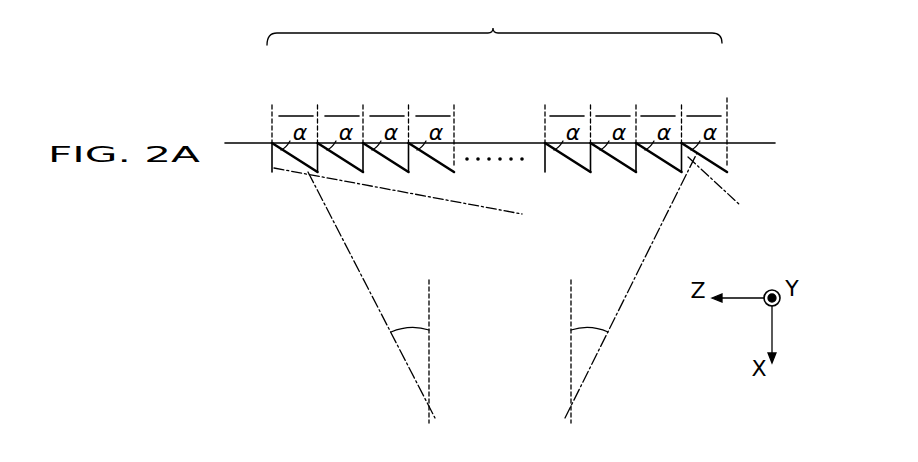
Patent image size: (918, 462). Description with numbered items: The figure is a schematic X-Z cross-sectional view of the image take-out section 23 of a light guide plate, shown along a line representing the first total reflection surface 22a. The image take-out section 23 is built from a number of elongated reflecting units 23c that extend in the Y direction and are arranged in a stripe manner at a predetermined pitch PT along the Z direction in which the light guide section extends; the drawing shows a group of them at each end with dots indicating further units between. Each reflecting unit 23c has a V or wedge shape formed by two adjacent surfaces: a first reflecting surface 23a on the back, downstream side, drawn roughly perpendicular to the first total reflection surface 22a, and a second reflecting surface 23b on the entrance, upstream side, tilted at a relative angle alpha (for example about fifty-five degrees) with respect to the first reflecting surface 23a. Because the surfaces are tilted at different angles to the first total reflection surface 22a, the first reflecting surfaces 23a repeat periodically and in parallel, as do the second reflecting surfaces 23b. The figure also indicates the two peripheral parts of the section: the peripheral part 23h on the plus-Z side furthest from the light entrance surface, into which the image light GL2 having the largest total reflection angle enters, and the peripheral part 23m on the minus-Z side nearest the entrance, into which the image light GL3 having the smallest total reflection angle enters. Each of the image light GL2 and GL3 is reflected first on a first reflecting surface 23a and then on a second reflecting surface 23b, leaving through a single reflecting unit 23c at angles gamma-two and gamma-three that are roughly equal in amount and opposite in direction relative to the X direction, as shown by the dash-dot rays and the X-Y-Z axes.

The first total reflection surface 22a is at (755, 143).
The image take-out section 23 is at (494, 22).
The first reflecting surface 23a is at (282, 170).
The second reflecting surface 23b is at (318, 165).
The reflecting unit 23c is at (296, 96).
The peripheral part 23h is at (265, 193).
The peripheral part 23m is at (777, 204).
The pitch PT is at (302, 115).
The image light GL2 is at (402, 356).
The image light GL3 is at (598, 360).